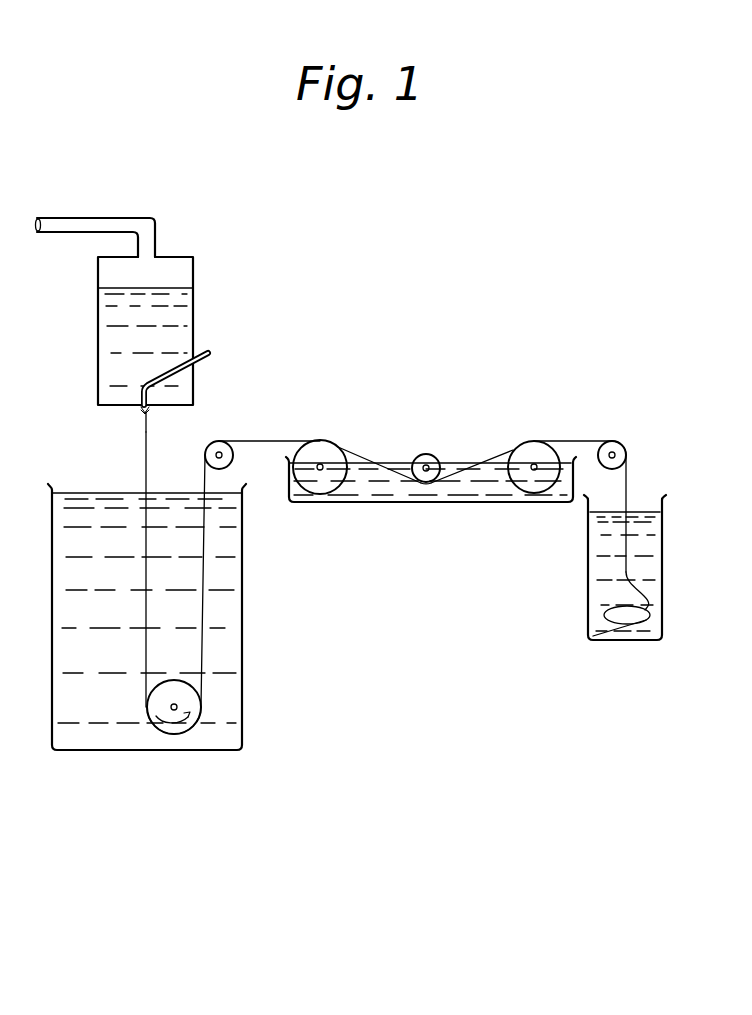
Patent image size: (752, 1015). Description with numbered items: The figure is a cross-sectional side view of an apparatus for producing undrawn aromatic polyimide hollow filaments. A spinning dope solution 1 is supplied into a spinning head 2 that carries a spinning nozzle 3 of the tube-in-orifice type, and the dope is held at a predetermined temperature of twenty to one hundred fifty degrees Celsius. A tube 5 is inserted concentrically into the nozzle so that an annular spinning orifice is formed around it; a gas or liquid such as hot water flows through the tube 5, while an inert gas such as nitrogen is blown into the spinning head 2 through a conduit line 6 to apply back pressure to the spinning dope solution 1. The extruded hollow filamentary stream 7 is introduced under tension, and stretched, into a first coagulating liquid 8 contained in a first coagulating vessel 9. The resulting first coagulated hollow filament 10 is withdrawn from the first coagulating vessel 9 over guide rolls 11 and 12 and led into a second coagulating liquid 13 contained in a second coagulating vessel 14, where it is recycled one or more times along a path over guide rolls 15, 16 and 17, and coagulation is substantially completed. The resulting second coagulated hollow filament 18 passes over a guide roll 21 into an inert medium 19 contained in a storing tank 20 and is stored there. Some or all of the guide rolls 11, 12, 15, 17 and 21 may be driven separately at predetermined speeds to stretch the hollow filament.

The spinning dope solution 1 is at (180, 333).
The spinning head 2 is at (195, 273).
The spinning nozzle 3 is at (148, 413).
The tube 5 is at (150, 393).
The conduit line 6 is at (84, 216).
The hollow filamentary stream 7 is at (147, 473).
The first coagulating liquid 8 is at (64, 578).
The first coagulating vessel 9 is at (243, 620).
The first coagulated hollow filament 10 is at (204, 572).
The guide roll 11 is at (190, 697).
The guide roll 12 is at (235, 460).
The second coagulating liquid 13 is at (483, 487).
The second coagulating vessel 14 is at (368, 503).
The guide roll 15 is at (323, 448).
The guide roll 16 is at (424, 455).
The guide roll 17 is at (533, 443).
The second coagulated hollow filament 18 is at (590, 437).
The inert medium 19 is at (653, 550).
The storing tank 20 is at (588, 602).
The guide roll 21 is at (627, 452).